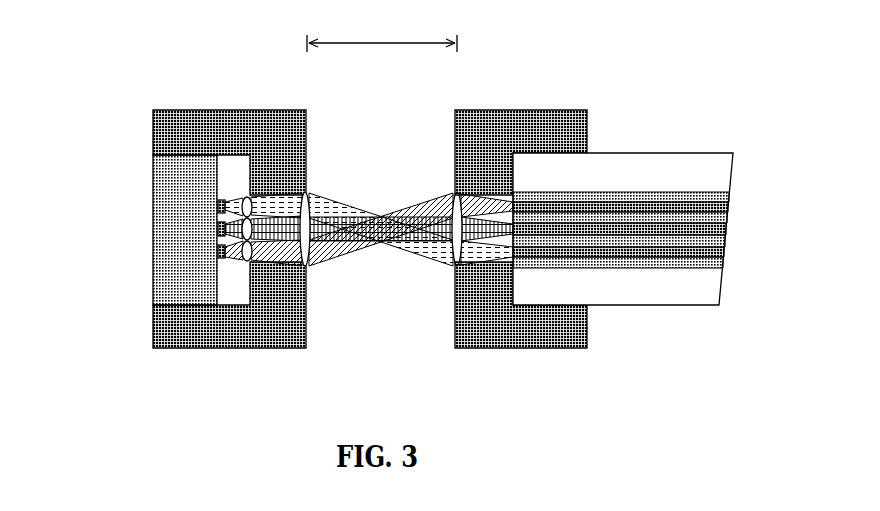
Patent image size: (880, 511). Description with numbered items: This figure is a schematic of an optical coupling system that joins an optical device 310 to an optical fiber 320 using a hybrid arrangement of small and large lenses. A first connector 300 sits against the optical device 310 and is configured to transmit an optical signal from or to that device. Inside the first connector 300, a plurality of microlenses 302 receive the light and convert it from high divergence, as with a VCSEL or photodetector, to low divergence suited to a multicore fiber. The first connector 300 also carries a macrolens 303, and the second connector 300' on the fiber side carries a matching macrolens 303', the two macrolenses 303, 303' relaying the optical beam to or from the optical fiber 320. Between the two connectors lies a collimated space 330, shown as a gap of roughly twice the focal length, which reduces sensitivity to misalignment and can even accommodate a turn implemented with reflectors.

The first connector 300 is at (213, 272).
The second connector 300' is at (502, 271).
The microlenses 302 is at (250, 198).
The macrolens 303 is at (360, 204).
The macrolens 303' is at (523, 164).
The optical device 310 is at (150, 268).
The optical fiber 320 is at (642, 303).
The collimated space 330 is at (382, 26).